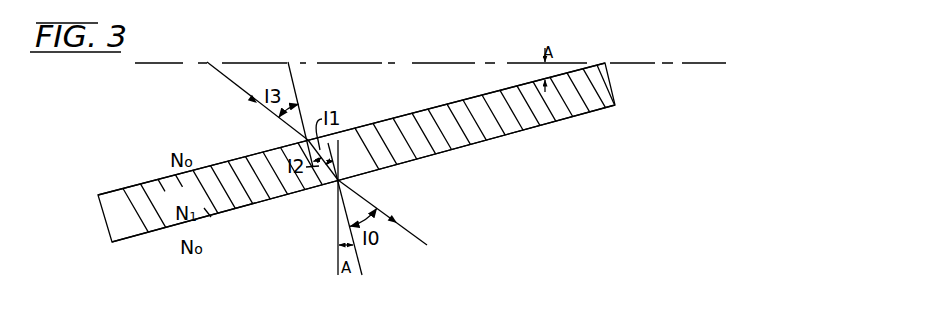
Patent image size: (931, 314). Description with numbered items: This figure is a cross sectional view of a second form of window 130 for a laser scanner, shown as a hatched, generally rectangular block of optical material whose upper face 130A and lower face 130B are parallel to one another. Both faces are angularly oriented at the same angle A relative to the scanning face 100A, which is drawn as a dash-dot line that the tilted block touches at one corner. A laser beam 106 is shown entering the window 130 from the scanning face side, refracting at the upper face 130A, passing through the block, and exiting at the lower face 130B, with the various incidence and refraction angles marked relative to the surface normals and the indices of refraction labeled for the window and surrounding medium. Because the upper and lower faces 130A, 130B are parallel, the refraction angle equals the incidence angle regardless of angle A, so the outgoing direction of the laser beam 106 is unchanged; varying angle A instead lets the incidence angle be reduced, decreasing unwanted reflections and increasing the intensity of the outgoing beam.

The scanning face 100A is at (604, 63).
The laser beam 106 is at (235, 87).
The window 130 is at (467, 140).
The upper face 130A is at (397, 91).
The lower face 130B is at (423, 157).